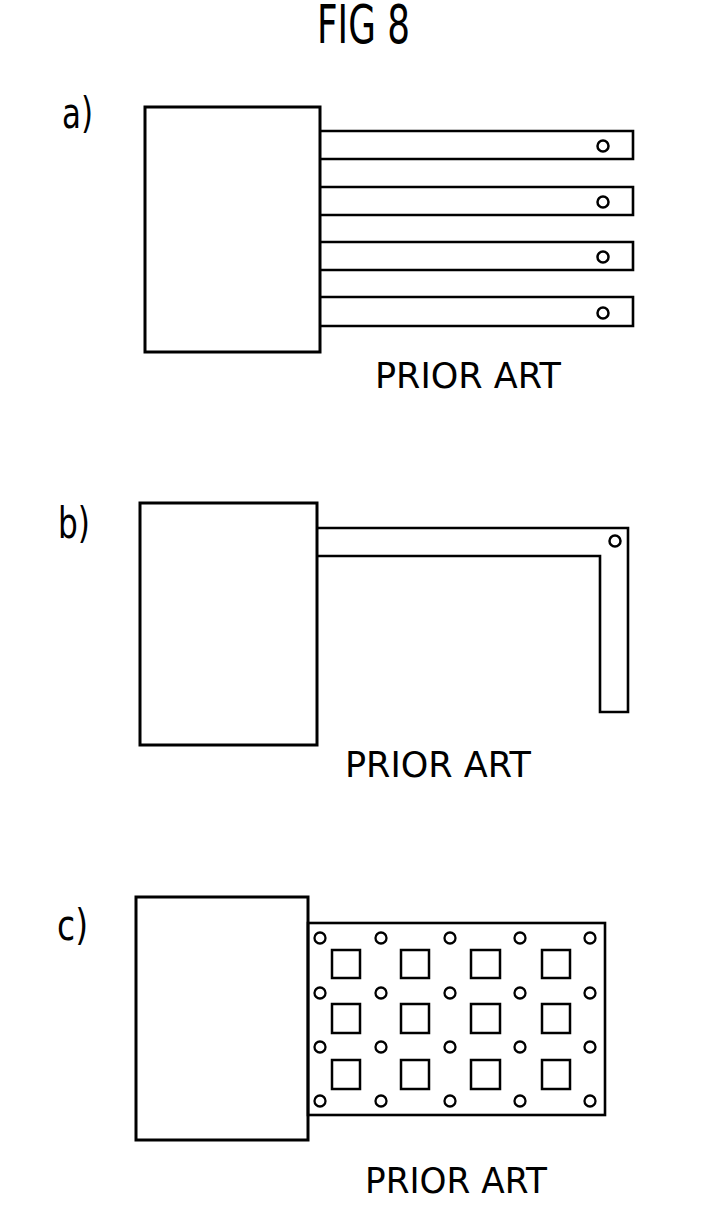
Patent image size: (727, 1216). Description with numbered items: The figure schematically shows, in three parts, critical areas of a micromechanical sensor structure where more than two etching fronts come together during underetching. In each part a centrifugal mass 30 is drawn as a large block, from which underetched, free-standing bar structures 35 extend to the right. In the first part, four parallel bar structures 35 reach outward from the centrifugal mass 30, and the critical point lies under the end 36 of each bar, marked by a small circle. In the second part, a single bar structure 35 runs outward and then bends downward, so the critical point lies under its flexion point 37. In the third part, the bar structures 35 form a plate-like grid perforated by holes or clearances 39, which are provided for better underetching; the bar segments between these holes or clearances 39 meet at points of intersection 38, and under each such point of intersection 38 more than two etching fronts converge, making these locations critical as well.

The centrifugal mass 30 is at (158, 218).
The underetched, free-standing bar structures 35 is at (487, 143).
The end of bar structures 36 is at (607, 140).
The flexion points of bar structures 37 is at (618, 535).
The points of intersection of bar structures 38 is at (593, 932).
The holes or clearances 39 is at (483, 960).